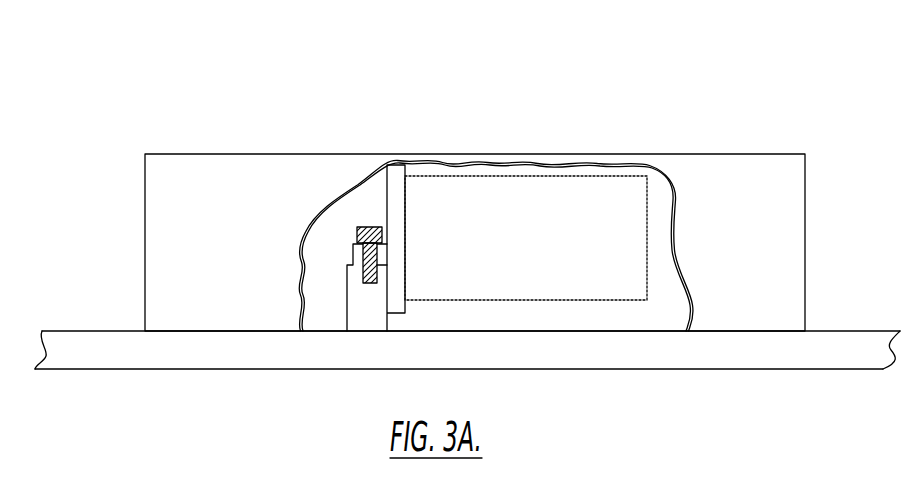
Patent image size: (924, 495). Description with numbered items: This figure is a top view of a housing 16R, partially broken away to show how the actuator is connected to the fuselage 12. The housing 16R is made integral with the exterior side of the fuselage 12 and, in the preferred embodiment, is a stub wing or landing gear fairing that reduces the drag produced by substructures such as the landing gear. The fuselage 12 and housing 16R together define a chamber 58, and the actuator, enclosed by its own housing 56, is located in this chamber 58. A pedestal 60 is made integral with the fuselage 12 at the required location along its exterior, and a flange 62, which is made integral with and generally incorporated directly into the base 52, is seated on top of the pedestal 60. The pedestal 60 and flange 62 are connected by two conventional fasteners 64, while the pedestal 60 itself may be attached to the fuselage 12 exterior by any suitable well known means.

The fuselage 12 is at (642, 355).
The housing 16R is at (636, 129).
The base 52 is at (397, 175).
The housing 56 is at (535, 273).
The chamber 58 is at (727, 249).
The pedestal 60 is at (358, 303).
The flange 62 is at (347, 252).
The fasteners 64 is at (367, 232).